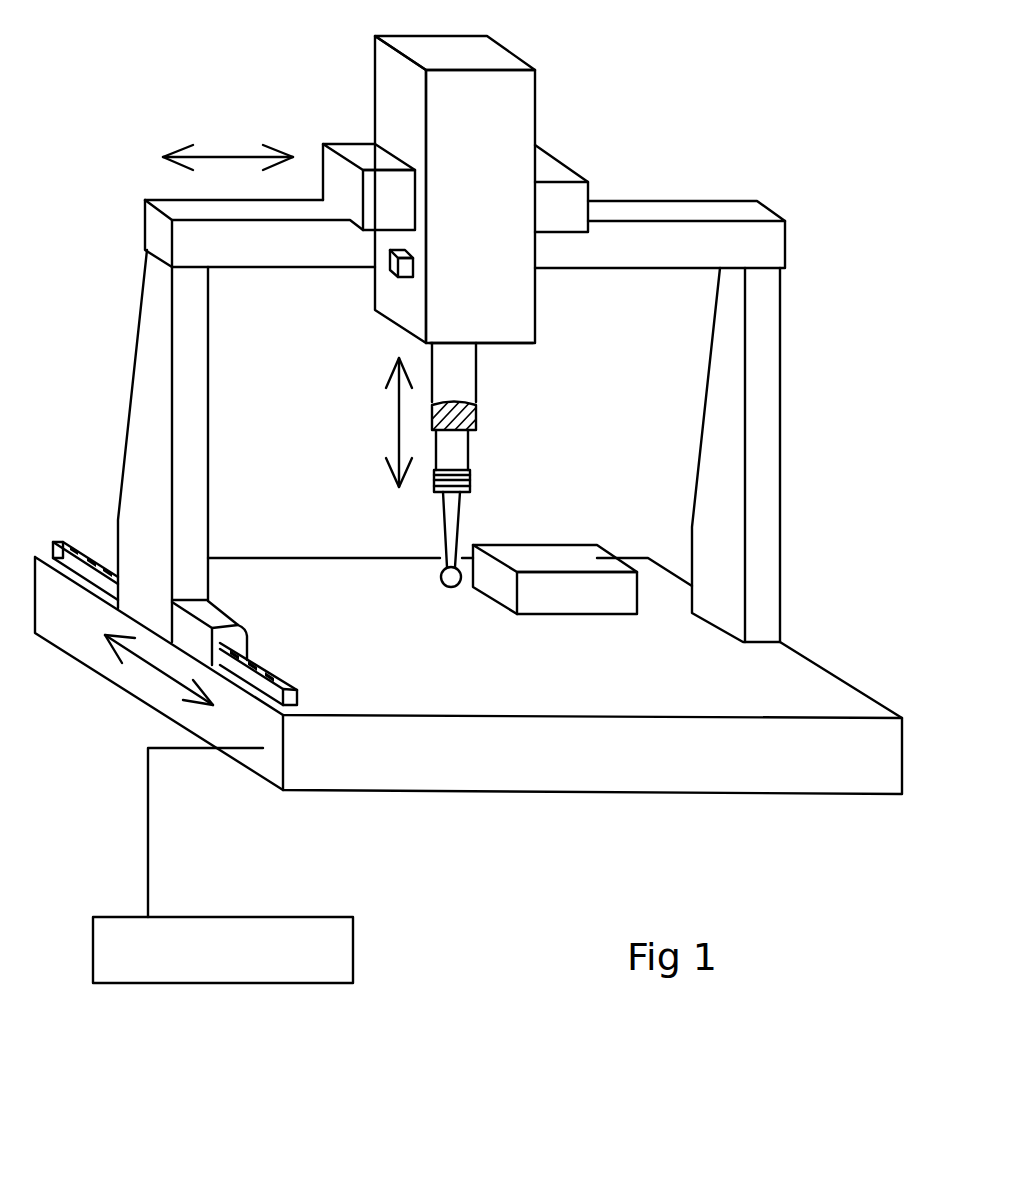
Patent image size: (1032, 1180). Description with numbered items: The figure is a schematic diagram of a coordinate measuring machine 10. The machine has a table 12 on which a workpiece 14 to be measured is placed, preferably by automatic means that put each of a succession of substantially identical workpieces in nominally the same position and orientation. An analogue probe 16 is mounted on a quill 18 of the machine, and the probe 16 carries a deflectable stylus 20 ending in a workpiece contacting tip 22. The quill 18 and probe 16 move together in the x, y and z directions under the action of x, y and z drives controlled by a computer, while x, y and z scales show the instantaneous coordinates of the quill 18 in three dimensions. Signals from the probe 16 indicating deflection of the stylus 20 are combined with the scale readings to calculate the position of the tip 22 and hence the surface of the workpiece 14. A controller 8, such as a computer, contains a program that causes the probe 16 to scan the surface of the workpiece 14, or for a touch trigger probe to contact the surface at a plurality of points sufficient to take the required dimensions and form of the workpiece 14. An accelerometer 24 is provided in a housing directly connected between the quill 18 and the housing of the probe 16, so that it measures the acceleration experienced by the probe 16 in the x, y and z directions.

The controller 8 is at (337, 971).
The coordinate measuring machine 10 is at (643, 122).
The table 12 is at (813, 687).
The workpiece 14 is at (563, 598).
The analogue probe 16 is at (460, 453).
The quill 18 is at (457, 375).
The deflectable stylus 20 is at (450, 523).
The workpiece contacting tip 22 is at (447, 585).
The accelerometer 24 is at (473, 427).